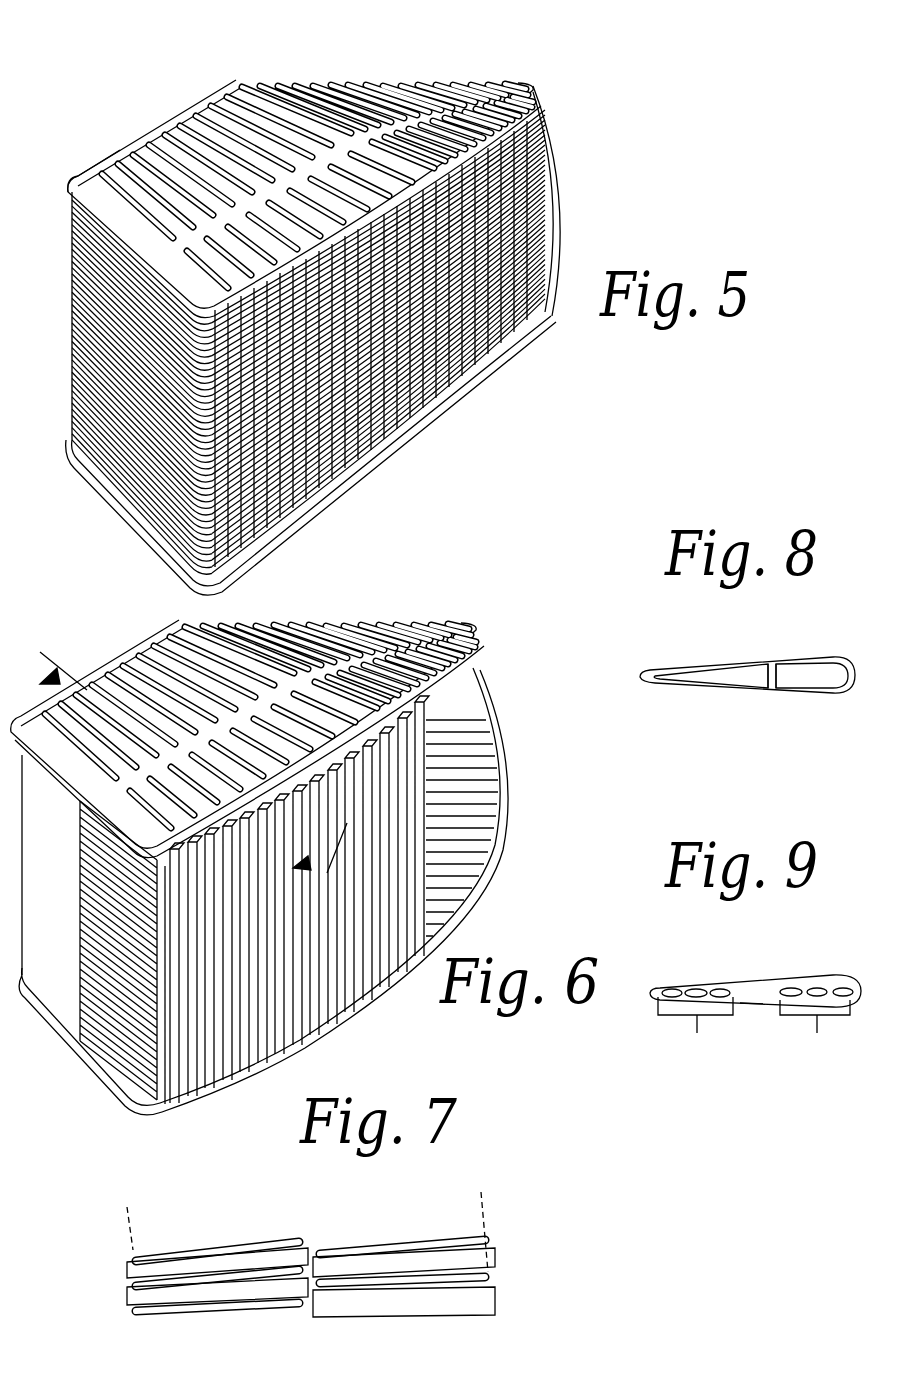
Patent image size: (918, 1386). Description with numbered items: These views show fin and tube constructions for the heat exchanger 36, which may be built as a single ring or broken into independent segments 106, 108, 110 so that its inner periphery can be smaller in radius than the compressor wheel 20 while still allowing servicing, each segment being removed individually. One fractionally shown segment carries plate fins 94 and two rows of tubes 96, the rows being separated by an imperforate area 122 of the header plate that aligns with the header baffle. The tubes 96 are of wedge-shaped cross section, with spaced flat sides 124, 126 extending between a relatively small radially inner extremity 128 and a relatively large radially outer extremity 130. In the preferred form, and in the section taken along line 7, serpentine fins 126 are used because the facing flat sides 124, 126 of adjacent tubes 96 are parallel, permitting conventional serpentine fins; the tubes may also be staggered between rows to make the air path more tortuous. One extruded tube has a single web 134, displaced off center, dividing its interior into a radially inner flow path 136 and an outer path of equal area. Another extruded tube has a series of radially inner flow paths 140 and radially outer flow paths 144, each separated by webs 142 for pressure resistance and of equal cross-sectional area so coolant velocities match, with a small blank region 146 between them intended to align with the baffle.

In FIG. 6, the section line 7- 7 is at (52, 680).
In FIG. 5, the compressor wheel 20 is at (88, 192).
In FIG. 5, the heat exchanger 36 is at (311, 308).
In FIG. 5, the plate fins 94 is at (155, 494).
In FIG. 5, the tubes 96 is at (336, 100).
In FIG. 6, the tubes 96 is at (270, 658).
In FIG. 7, the tubes 96 is at (310, 1232).
In FIG. 8, the tubes 96 is at (670, 667).
In FIG. 9, the tubes 96 is at (713, 987).
In FIG. 5, the heat exchanger segment 106 is at (318, 455).
In FIG. 5, the heat exchanger segment 108 is at (318, 455).
In FIG. 5, the heat exchanger segment 110 is at (470, 400).
In FIG. 5, the imperforate area 122 is at (380, 97).
In FIG. 6, the imperforate area 122 is at (322, 645).
In FIG. 7, the flat side 124 is at (279, 1249).
In FIG. 6, the flat side / serpentine fin 126 is at (177, 1010).
In FIG. 7, the flat side / serpentine fin 126 is at (321, 1276).
In FIG. 7, the radially inner extremity 128 is at (130, 1258).
In FIG. 7, the radially outer extremity 130 is at (303, 1238).
In FIG. 8, the radially outer extremity 130 is at (817, 682).
In FIG. 8, the web 134 is at (778, 672).
In FIG. 8, the radially inner flow path 136 is at (738, 682).
In FIG. 9, the radially inner flow paths 140 is at (695, 1031).
In FIG. 9, the webs 142 is at (710, 988).
In FIG. 9, the radially outer flow paths 144 is at (815, 1032).
In FIG. 9, the blank region 146 is at (752, 1000).